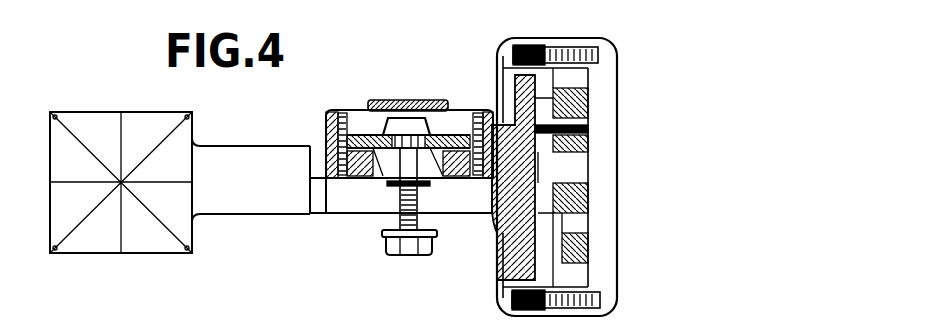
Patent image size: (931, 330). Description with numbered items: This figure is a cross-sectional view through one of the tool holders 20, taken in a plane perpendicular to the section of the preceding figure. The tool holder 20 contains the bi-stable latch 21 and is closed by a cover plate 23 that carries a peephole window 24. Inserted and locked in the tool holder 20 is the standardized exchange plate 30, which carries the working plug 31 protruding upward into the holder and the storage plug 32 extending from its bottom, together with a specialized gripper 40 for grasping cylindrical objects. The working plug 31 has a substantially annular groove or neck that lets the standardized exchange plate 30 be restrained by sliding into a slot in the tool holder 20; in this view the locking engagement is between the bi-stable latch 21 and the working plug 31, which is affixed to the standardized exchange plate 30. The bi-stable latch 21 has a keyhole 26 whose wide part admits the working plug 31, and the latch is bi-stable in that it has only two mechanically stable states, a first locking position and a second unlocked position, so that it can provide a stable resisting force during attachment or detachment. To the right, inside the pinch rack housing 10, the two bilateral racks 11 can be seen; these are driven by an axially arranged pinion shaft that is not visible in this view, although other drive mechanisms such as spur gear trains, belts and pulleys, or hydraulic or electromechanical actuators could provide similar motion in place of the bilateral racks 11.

The pinch rack housing 10 is at (608, 73).
The bilateral racks 11 is at (590, 143).
The tool holder 20 is at (502, 193).
The bi-stable latch 21 is at (363, 110).
The cover plate 23 is at (326, 128).
The peephole window 24 is at (392, 101).
The keyhole 26 is at (458, 109).
The standardized exchange plate 30 is at (350, 194).
The working plug 31 is at (417, 127).
The storage plug 32 is at (395, 253).
The specialized gripper 40 is at (145, 133).